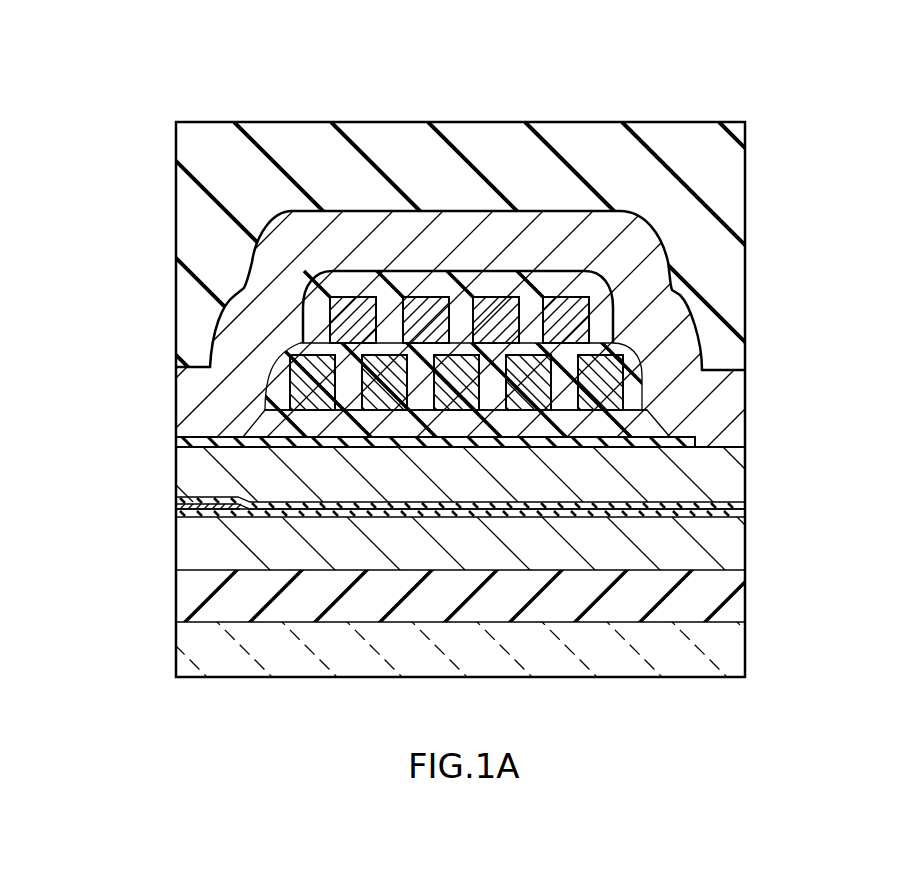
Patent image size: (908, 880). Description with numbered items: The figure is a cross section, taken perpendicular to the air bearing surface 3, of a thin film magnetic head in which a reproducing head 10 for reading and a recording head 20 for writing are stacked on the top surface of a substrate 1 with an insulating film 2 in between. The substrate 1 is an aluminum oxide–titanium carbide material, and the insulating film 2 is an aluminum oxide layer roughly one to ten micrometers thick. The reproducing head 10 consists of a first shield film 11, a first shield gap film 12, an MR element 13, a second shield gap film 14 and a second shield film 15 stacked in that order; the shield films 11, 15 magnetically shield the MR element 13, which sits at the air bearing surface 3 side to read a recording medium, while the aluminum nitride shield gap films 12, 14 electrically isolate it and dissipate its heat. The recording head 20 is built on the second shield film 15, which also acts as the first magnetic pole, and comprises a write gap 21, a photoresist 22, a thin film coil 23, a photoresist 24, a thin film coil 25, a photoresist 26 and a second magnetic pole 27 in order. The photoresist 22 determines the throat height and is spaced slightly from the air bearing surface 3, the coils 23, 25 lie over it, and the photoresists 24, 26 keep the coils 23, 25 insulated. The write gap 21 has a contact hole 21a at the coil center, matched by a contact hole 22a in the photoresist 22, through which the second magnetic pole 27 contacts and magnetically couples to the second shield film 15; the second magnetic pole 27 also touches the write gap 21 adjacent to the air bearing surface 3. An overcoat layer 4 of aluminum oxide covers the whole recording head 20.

The substrate 1 is at (730, 648).
The insulating film 2 is at (733, 603).
The air bearing surface 3 is at (454, 383).
The overcoat layer 4 is at (648, 136).
The reproducing head 10 is at (500, 515).
The first shield film 11 is at (738, 557).
The first shield gap film 12 is at (738, 525).
The MR element 13 is at (175, 506).
The second shield gap film 14 is at (738, 498).
The second shield film 15 is at (740, 457).
The recording head 20 is at (454, 383).
The write gap 21 is at (193, 435).
The contact hole 21a is at (703, 443).
The photoresist 22 is at (268, 425).
The contact hole 22a is at (690, 418).
The thin film coil 23 is at (300, 348).
The photoresist 24 is at (387, 351).
The thin film coil 25 is at (420, 300).
The photoresist 26 is at (503, 277).
The second magnetic pole 27 is at (580, 227).